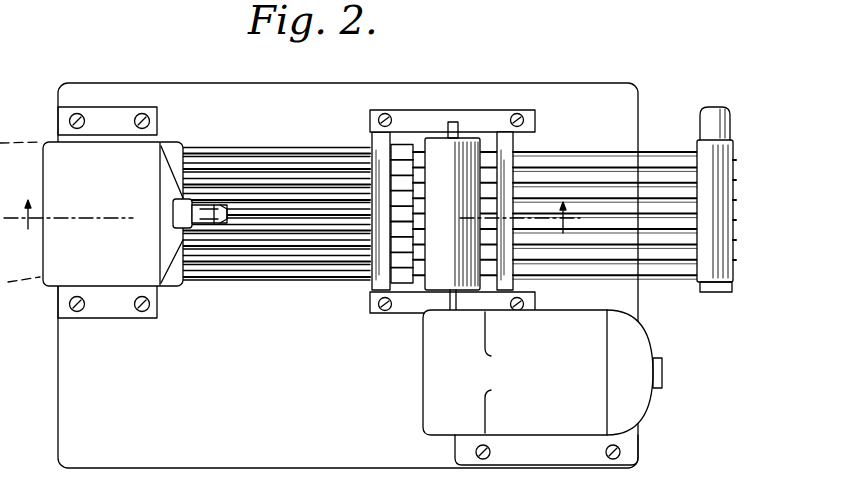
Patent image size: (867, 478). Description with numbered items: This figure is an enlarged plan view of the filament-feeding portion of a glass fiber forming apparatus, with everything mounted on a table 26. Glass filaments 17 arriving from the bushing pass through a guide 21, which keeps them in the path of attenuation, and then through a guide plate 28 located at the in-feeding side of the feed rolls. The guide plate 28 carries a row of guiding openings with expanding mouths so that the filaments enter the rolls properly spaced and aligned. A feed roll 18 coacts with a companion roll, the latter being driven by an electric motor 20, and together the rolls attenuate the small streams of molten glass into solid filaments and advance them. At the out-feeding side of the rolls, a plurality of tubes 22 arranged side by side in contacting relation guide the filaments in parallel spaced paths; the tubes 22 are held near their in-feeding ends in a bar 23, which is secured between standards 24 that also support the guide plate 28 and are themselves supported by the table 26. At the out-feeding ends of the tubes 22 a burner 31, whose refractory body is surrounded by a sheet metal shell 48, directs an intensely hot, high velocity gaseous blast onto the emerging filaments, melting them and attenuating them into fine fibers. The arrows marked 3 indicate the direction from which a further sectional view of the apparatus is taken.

The table 26 is at (555, 93).
The sheet metal shell 48 is at (51, 143).
The burner 31 is at (143, 157).
The tubes 22 is at (283, 158).
The bar 23 is at (375, 137).
The standards 24 is at (401, 130).
The feed roll 18 is at (449, 153).
The guide plate 28 is at (508, 142).
The filaments 17 is at (612, 170).
The guide 21 is at (703, 149).
The electric motor 20 is at (646, 336).
The section line of FIG. 3 is at (292, 222).